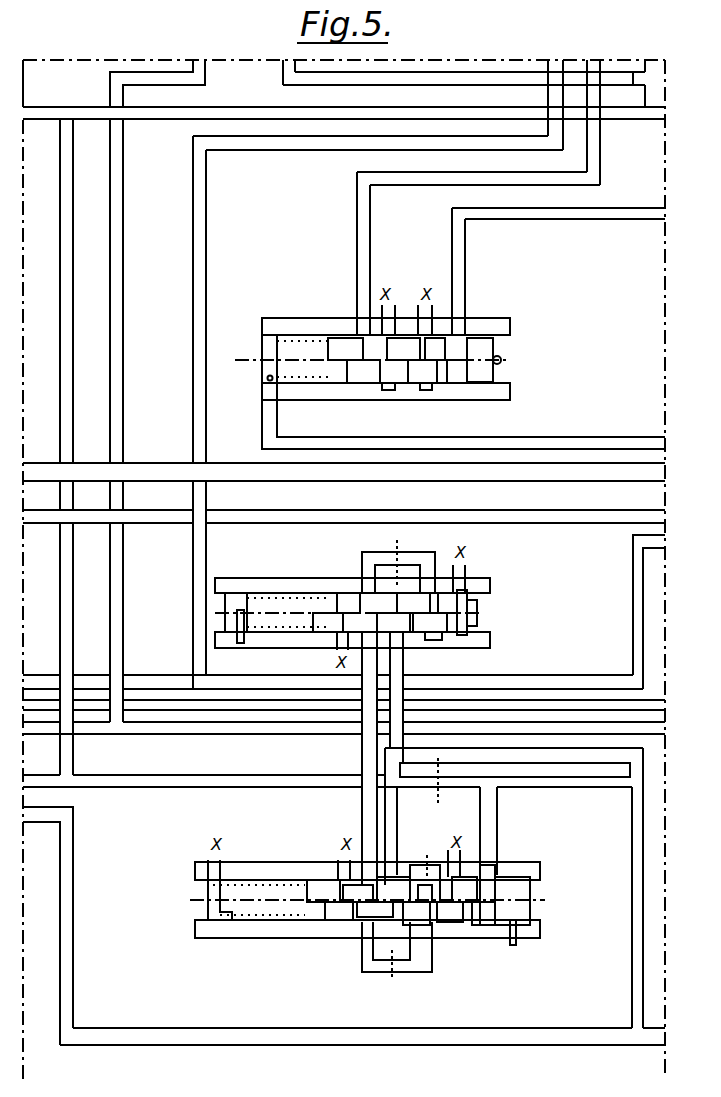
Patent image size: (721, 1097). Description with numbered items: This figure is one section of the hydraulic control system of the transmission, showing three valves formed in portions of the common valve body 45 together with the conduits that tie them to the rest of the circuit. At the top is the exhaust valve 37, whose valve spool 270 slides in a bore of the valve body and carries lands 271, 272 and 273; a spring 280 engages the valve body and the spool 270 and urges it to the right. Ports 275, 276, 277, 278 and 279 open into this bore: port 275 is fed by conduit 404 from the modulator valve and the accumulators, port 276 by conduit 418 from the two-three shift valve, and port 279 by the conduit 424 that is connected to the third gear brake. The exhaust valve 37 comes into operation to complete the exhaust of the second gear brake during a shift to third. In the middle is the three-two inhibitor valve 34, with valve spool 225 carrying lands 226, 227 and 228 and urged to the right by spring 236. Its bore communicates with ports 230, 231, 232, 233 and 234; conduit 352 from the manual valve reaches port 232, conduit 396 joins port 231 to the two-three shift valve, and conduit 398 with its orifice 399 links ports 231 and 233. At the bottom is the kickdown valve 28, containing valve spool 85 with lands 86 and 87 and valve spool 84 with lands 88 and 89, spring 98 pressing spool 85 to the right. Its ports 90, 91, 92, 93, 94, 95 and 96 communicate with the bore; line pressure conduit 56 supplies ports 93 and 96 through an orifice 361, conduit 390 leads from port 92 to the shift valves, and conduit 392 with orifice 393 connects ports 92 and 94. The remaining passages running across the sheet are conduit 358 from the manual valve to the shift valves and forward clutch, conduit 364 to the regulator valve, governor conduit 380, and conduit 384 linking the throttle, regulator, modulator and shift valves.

The conduit 352 is at (205, 72).
The conduit 358 is at (295, 80).
The conduit 380 is at (190, 115).
The conduit 384 is at (200, 160).
The conduit 390 is at (70, 282).
The line pressure conduit 56 is at (155, 470).
The conduit 364 is at (178, 518).
The conduit 396 is at (160, 705).
The conduit 418 is at (357, 183).
The conduit 424 is at (645, 215).
The conduit 404 is at (648, 437).
The exhaust valve 37 is at (527, 343).
The port 275 is at (290, 336).
The spring 280 is at (268, 382).
The valve spool 270 is at (337, 336).
The port 276 is at (369, 336).
The port 279 is at (468, 330).
The land 271 is at (362, 380).
The port 277 is at (383, 392).
The land 272 is at (420, 382).
The port 278 is at (430, 392).
The land 273 is at (458, 380).
The 3-2 inhibitor valve 34 is at (521, 576).
The valve spool 225 is at (275, 636).
The valve body 45 is at (218, 582).
The spring 236 is at (283, 595).
The land 226 is at (337, 598).
The port 230 is at (337, 640).
The conduit 398 is at (362, 565).
The port 232 is at (397, 562).
The orifice 399 is at (401, 578).
The land 227 is at (455, 595).
The land 228 is at (470, 608).
The port 234 is at (470, 624).
The port 233 is at (442, 637).
The port 231 is at (372, 640).
The orifice 361 is at (442, 778).
The kickdown valve 28 is at (553, 900).
The port 90 is at (208, 920).
The spring 98 is at (255, 878).
The land 86 is at (320, 880).
The valve spool 85 is at (326, 924).
The port 91 is at (346, 925).
The port 92 is at (362, 950).
The port 93 is at (392, 875).
The land 87 is at (408, 878).
The valve spool 84 is at (427, 877).
The land 88 is at (440, 882).
The land 89 is at (470, 890).
The port 95 is at (440, 938).
The port 94 is at (432, 945).
The port 96 is at (486, 940).
The conduit 392 is at (375, 965).
The orifice 393 is at (396, 972).